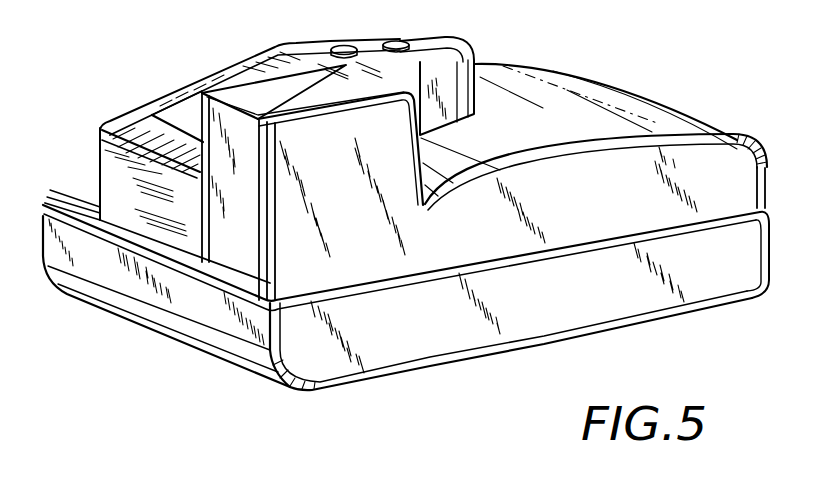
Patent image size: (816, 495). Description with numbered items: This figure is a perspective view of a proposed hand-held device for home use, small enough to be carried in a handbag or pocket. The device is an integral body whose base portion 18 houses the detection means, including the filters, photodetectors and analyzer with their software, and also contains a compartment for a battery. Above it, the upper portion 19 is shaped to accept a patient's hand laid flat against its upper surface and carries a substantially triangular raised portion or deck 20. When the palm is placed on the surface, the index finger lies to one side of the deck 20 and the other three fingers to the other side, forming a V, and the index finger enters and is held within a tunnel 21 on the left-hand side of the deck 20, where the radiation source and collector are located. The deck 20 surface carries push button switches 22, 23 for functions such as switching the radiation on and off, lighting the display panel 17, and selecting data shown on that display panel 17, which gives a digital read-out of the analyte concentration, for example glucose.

The display panel 17 is at (178, 108).
The base portion 18 is at (742, 272).
The upper portion 19 is at (651, 116).
The deck 20 is at (443, 14).
The tunnel 21 is at (236, 220).
The push button switch 22 is at (347, 44).
The push button switch 23 is at (400, 40).